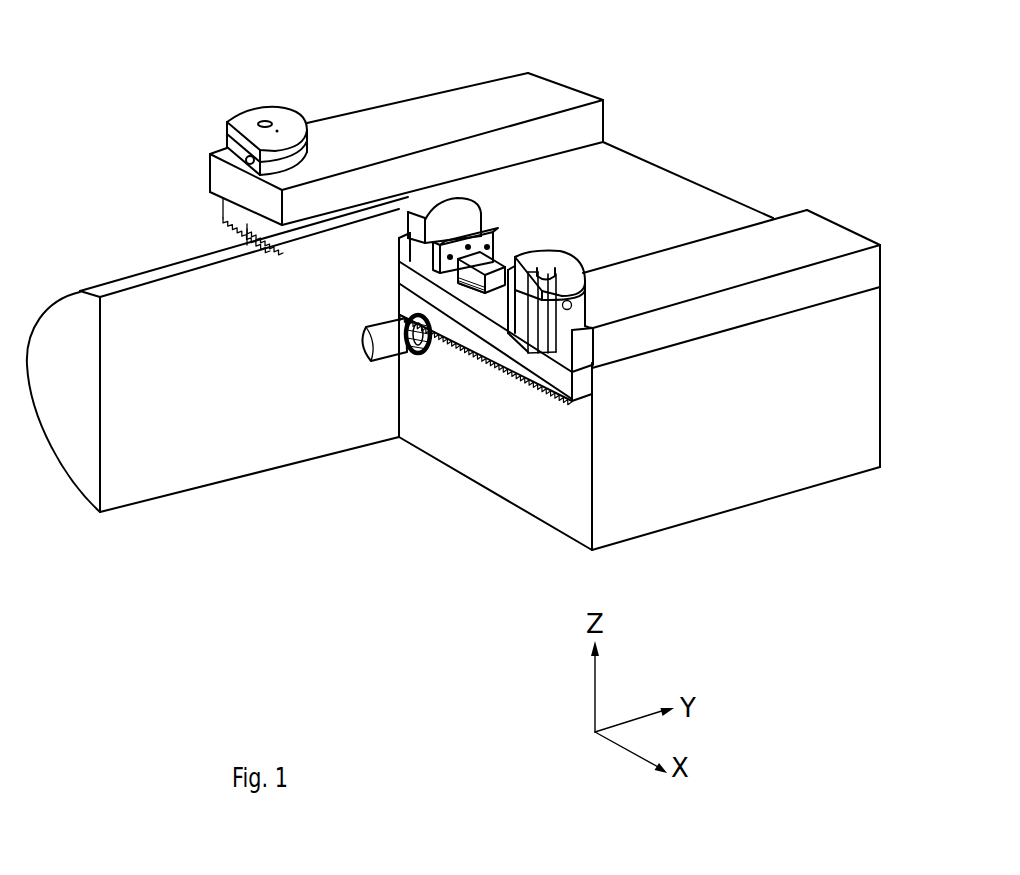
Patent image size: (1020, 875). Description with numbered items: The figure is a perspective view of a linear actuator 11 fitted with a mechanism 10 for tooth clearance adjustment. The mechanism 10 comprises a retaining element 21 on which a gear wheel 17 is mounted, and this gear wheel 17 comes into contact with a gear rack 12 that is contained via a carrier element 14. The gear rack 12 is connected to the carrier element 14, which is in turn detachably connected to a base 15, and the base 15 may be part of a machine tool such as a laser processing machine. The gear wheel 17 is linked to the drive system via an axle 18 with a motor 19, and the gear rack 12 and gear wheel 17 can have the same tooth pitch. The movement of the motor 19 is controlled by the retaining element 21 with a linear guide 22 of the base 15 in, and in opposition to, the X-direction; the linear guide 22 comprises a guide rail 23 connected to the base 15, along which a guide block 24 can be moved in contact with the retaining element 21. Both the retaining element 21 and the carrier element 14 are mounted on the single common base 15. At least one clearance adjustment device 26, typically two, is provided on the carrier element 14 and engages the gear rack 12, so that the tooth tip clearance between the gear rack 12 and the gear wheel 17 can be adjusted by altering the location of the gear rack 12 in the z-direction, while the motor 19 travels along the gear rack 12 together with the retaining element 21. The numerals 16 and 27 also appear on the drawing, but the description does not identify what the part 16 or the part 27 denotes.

The mechanism for tooth clearance adjustment 10 is at (308, 292).
The linear actuator 11 is at (432, 490).
The gear rack 12 is at (540, 368).
The carrier element 14 is at (498, 104).
The base 15 is at (760, 483).
The bracket 16 is at (597, 322).
The gear wheel 17 is at (427, 355).
The axle 18 is at (362, 350).
The motor 19 is at (202, 458).
The retaining element 21 is at (448, 207).
The linear guide 22 is at (482, 213).
The guide rail 23 is at (561, 258).
The guide block 24 is at (490, 258).
The clearance adjustment device 26 is at (262, 104).
The cylinder body 27 is at (316, 147).